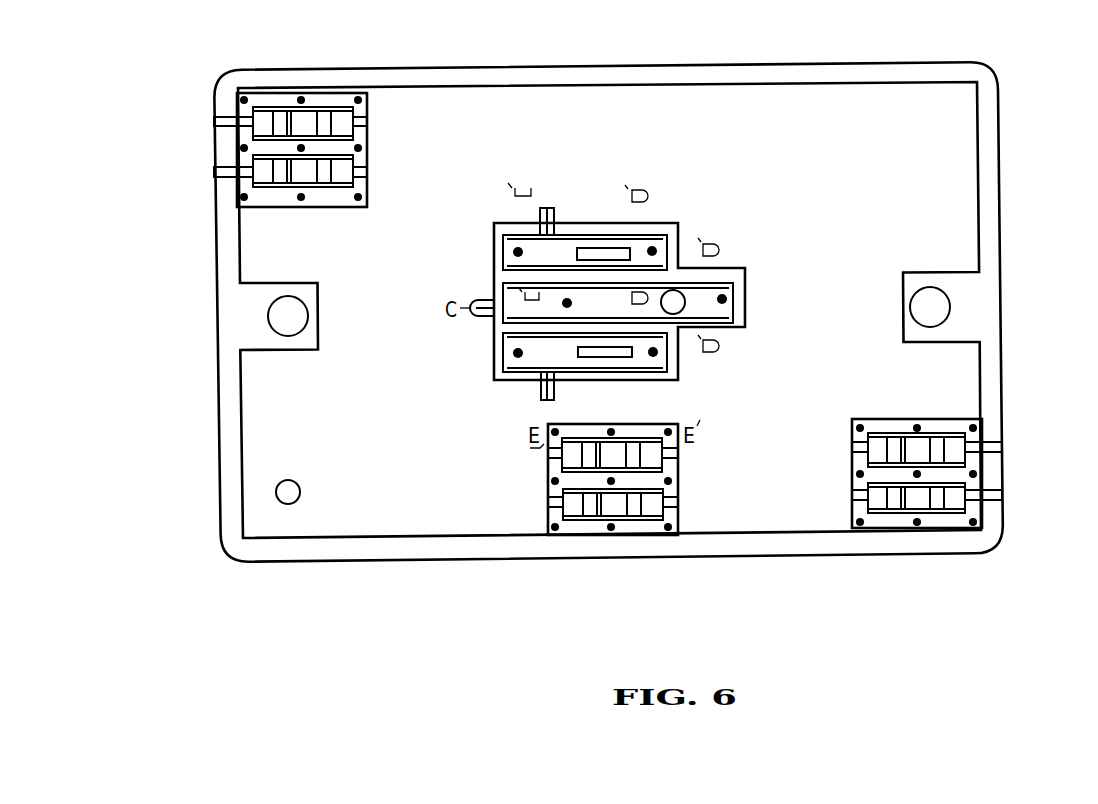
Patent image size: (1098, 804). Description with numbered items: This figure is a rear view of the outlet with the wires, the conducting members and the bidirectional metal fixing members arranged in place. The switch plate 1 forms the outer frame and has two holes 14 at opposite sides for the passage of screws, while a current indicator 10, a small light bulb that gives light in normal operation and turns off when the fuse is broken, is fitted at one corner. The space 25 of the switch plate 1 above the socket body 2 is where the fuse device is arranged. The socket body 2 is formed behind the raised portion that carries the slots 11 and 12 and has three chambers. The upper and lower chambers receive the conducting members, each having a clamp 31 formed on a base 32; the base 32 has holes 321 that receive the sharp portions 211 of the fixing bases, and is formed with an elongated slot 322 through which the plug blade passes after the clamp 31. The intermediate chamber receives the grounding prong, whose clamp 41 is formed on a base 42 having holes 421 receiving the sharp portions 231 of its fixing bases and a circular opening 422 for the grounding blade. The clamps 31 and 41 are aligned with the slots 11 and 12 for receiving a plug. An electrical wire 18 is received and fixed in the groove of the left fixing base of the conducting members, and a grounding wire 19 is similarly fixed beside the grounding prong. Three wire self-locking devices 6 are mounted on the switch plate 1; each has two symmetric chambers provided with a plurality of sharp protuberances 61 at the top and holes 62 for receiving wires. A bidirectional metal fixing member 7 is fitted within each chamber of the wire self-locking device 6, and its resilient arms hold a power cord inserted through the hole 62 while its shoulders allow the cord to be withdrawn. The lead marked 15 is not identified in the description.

The switch plate 1 is at (1000, 96).
The socket body 2 is at (678, 222).
The wire self-locking device 6 is at (365, 187).
The bidirectional metal fixing member 7 is at (278, 173).
The current indicator 10 is at (288, 504).
The slot 11 is at (583, 220).
The slot 12 is at (690, 330).
The hole 14 is at (288, 310).
The through tab 15 is at (215, 172).
The electrical wire 18 is at (553, 208).
The grounding wire 19 is at (480, 318).
The space 25 is at (875, 105).
The clamp 31 is at (611, 279).
The base 32 is at (589, 283).
The clamp 41 is at (746, 354).
The base 42 is at (611, 305).
The sharp protuberance 61 is at (358, 98).
The hole 62 is at (368, 168).
The sharp portion 211 is at (658, 240).
The sharp portion 231 is at (733, 298).
The hole 321 is at (589, 285).
The elongated slot 322 is at (611, 279).
The hole 421 is at (611, 333).
The circular opening 422 is at (746, 354).